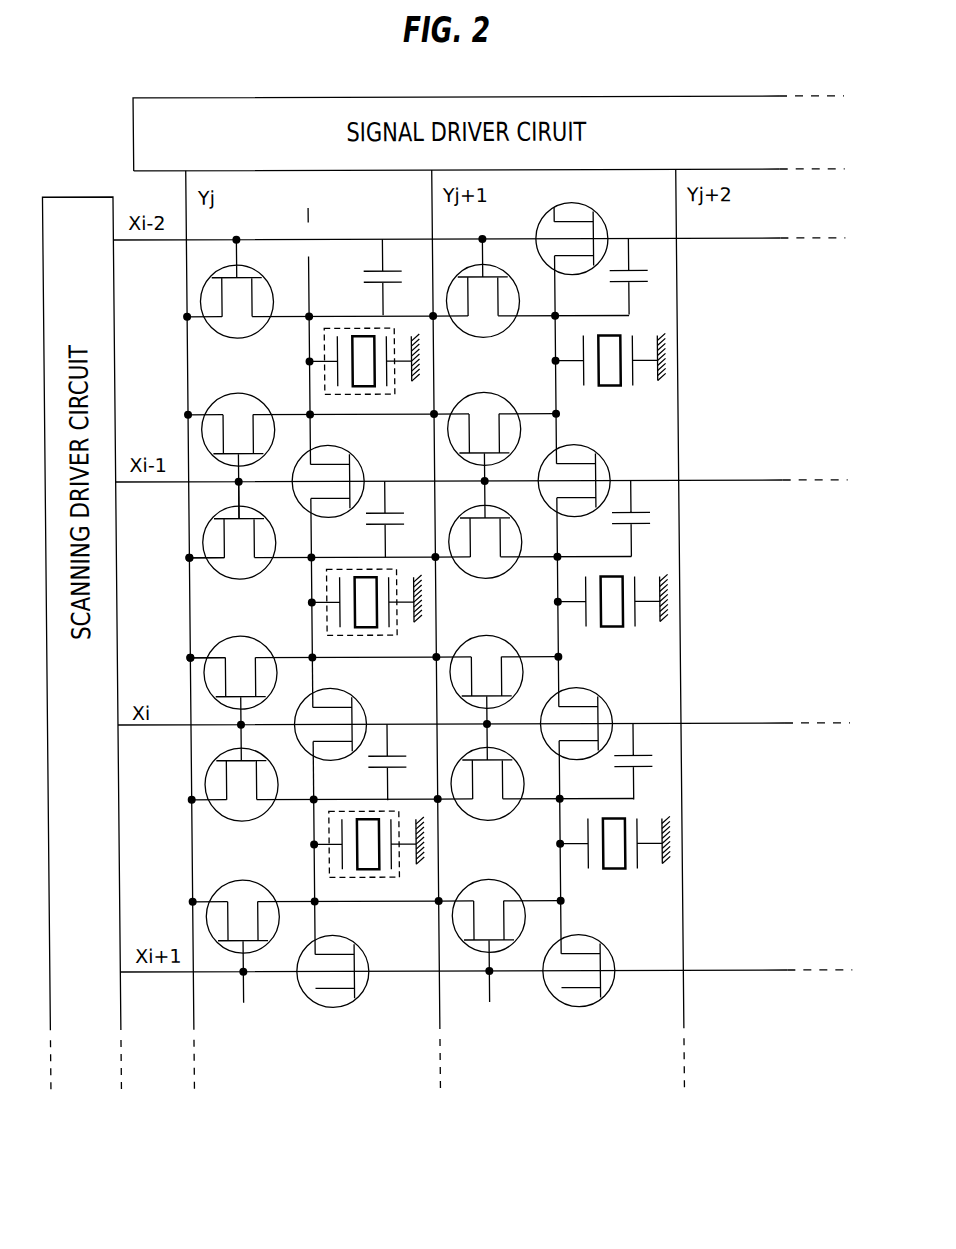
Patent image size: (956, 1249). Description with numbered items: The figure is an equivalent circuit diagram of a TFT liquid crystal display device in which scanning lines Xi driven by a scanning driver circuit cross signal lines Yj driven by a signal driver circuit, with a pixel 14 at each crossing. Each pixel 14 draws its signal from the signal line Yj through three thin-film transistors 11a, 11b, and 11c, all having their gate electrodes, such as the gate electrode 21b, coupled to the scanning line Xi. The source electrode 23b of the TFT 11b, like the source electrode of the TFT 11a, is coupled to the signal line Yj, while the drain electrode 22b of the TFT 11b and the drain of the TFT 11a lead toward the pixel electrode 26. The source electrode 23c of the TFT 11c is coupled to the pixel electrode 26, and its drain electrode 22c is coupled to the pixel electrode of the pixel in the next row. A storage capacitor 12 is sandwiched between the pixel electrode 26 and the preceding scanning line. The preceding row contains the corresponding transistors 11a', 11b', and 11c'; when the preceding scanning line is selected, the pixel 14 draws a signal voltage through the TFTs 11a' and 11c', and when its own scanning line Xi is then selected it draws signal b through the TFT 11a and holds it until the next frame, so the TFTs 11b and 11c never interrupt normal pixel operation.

The TFT 11a is at (205, 656).
The TFT 11a' is at (238, 413).
The TFT 11b is at (205, 531).
The TFT 11b' is at (201, 290).
The TFT 11c is at (354, 723).
The TFT 11c' is at (338, 461).
The storage capacitor 12 is at (401, 272).
The pixel 14 is at (367, 621).
The gate electrode 21b is at (230, 493).
The drain electrode 22b is at (282, 555).
The drain electrode 22c is at (312, 777).
The source electrode 23b is at (194, 563).
The source electrode 23c is at (312, 681).
The pixel electrode 26 is at (327, 592).